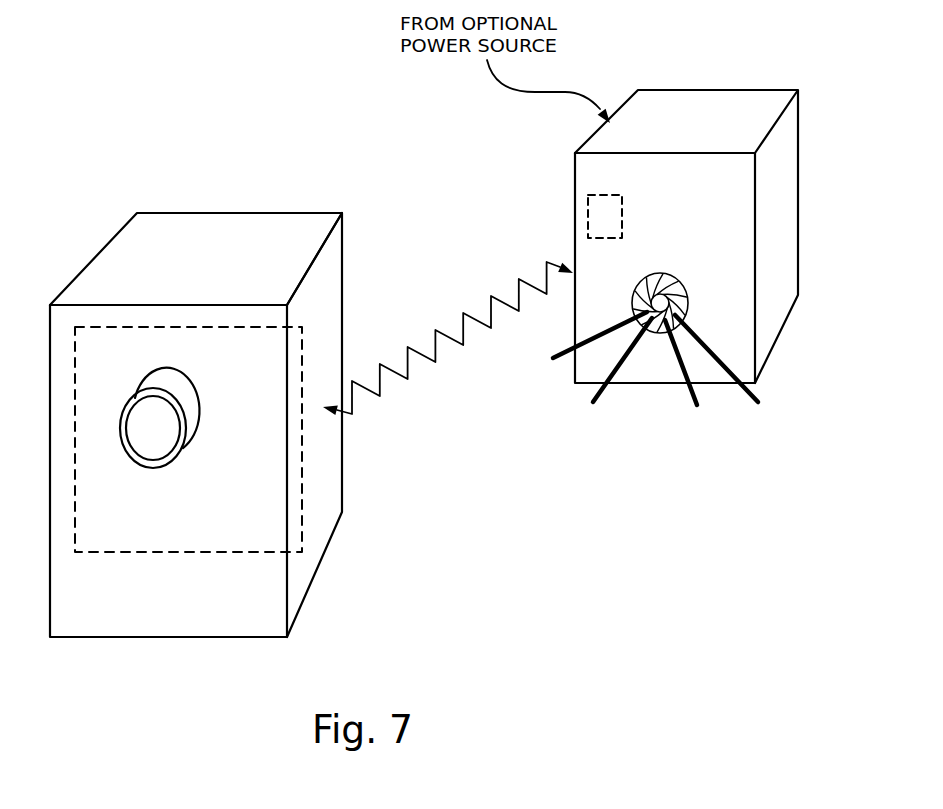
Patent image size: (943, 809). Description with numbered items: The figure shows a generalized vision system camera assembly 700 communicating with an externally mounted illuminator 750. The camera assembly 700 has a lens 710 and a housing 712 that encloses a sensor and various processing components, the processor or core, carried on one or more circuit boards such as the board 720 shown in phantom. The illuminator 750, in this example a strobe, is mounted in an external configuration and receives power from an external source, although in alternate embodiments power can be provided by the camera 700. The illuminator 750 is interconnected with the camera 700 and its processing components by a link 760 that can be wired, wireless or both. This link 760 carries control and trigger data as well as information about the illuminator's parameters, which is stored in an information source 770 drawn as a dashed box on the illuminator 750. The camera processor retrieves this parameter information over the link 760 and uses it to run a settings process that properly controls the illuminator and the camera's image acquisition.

The vision system camera assembly 700 is at (326, 579).
The lens 710 is at (140, 423).
The housing 712 is at (306, 218).
The circuit board 720 is at (302, 481).
The illuminator 750 is at (708, 103).
The link 760 is at (463, 342).
The information source 770 is at (587, 215).